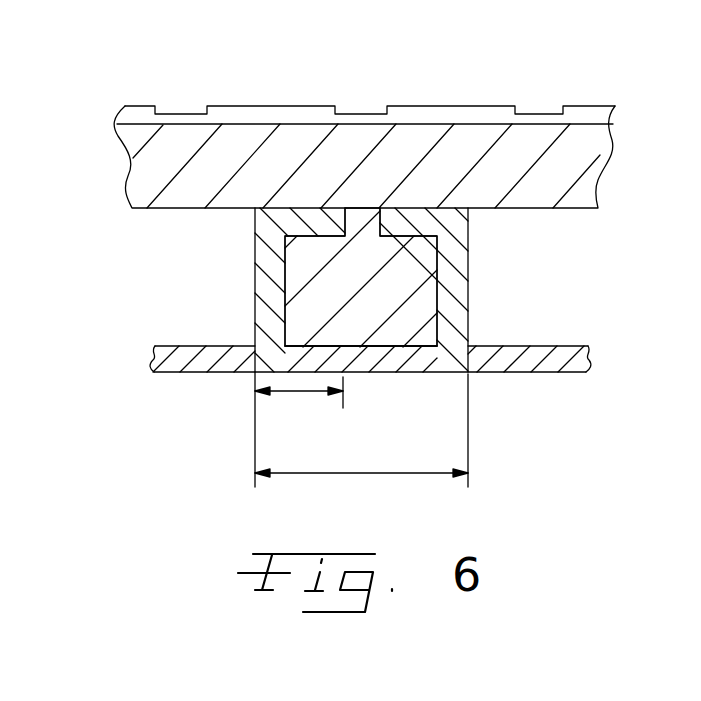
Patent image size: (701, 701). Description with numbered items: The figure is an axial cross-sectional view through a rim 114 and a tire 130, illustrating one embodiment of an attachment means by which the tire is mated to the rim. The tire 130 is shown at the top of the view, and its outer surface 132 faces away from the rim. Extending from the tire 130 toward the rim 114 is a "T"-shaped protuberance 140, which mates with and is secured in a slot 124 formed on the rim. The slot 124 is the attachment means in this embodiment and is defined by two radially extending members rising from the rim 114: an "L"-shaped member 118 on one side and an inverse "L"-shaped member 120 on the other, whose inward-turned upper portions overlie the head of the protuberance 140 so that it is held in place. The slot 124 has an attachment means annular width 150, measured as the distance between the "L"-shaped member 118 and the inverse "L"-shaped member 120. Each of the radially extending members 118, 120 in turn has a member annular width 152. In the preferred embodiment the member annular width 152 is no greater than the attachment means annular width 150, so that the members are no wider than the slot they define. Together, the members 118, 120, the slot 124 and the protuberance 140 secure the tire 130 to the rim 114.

The tire 130 is at (497, 90).
The grooves in panel surface 132 is at (295, 108).
The rim 114 is at (153, 360).
The "L"-shaped member 118 is at (268, 285).
The inverse "L"-shaped member 120 is at (457, 300).
The "T"-shaped protuberance 140 is at (422, 333).
The slot 124 is at (378, 347).
The attachment means annular width 150 is at (355, 475).
The member annular width 152 is at (302, 392).